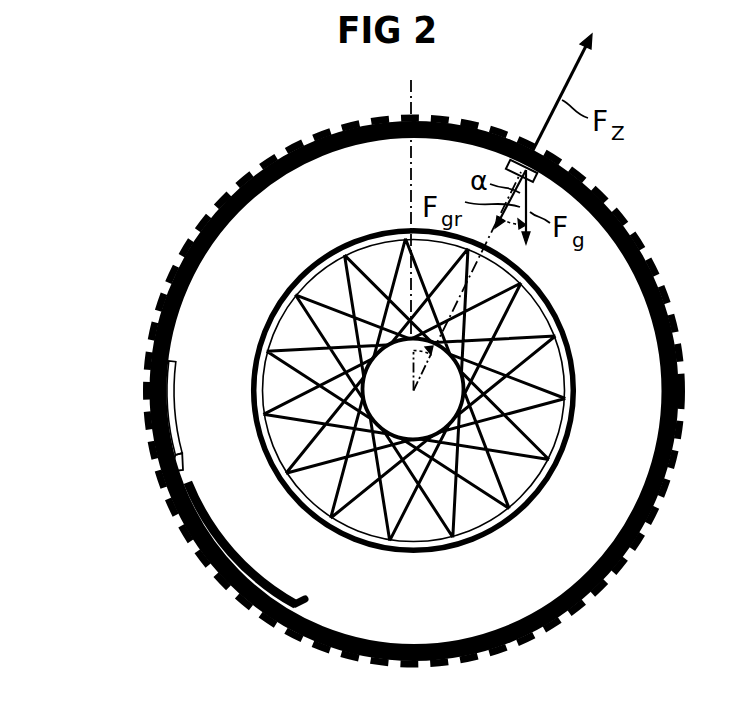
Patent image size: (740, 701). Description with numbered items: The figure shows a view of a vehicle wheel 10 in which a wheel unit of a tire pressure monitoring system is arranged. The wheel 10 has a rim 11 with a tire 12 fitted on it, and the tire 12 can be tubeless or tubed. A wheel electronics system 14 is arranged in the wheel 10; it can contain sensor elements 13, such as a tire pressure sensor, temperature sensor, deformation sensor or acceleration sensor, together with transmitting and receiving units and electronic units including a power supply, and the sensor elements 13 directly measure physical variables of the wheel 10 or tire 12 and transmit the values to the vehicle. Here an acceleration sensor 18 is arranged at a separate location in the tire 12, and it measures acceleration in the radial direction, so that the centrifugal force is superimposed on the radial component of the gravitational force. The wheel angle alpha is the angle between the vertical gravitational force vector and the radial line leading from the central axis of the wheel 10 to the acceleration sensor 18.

The vehicle wheel 10 is at (157, 243).
The rim 11 is at (575, 390).
The tire 12 is at (172, 532).
The sensor element 13 is at (148, 453).
The wheel electronics system 14 is at (170, 425).
The acceleration sensor 18 is at (528, 148).